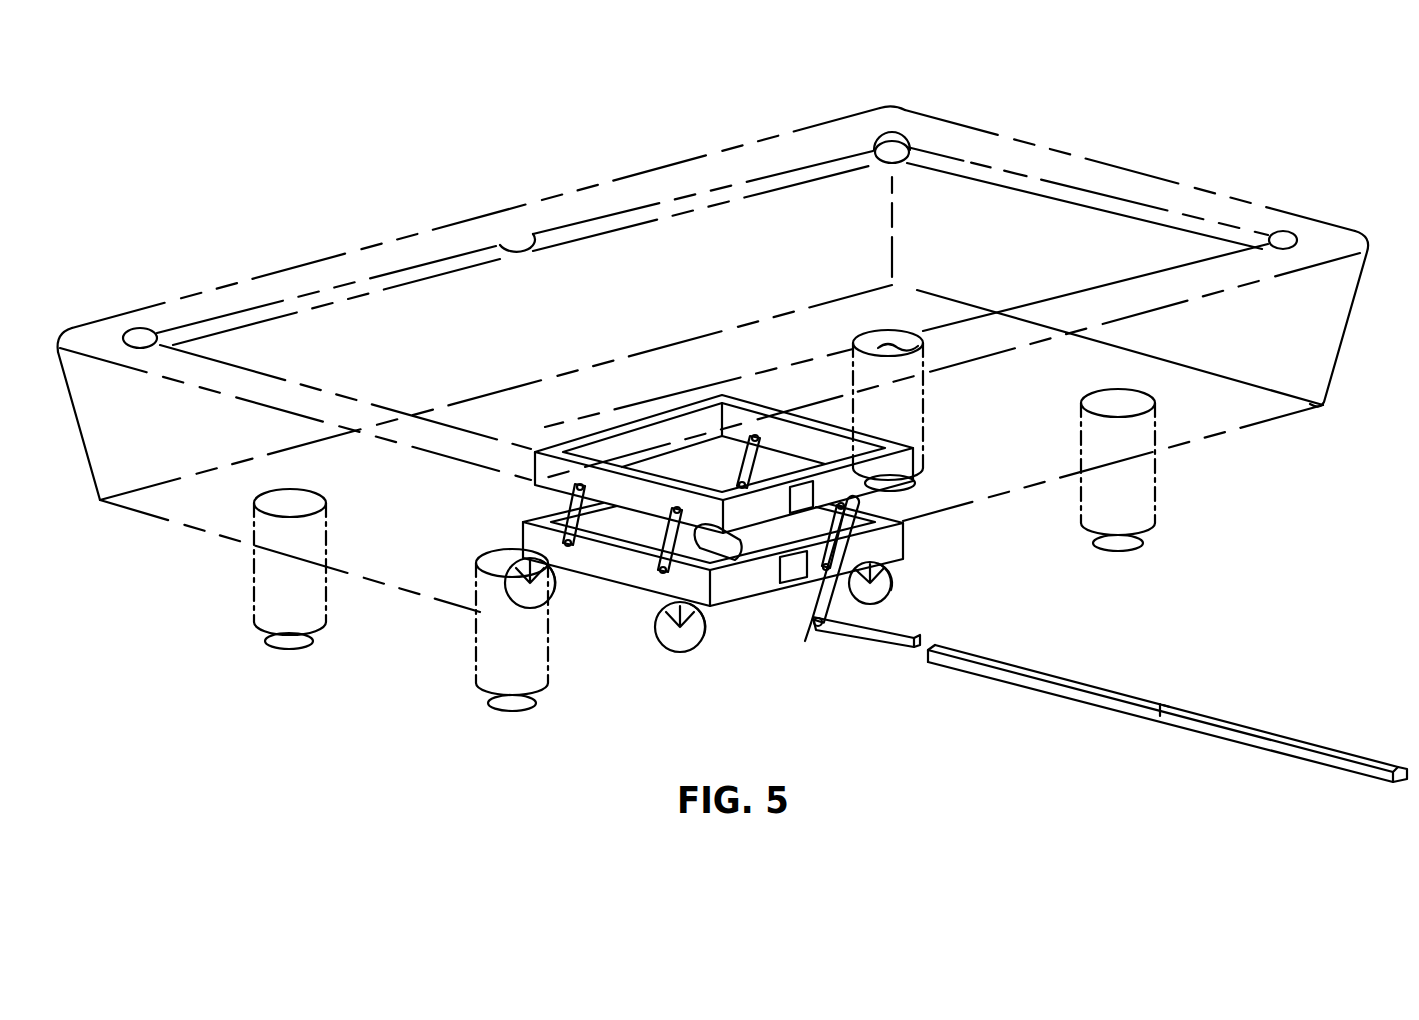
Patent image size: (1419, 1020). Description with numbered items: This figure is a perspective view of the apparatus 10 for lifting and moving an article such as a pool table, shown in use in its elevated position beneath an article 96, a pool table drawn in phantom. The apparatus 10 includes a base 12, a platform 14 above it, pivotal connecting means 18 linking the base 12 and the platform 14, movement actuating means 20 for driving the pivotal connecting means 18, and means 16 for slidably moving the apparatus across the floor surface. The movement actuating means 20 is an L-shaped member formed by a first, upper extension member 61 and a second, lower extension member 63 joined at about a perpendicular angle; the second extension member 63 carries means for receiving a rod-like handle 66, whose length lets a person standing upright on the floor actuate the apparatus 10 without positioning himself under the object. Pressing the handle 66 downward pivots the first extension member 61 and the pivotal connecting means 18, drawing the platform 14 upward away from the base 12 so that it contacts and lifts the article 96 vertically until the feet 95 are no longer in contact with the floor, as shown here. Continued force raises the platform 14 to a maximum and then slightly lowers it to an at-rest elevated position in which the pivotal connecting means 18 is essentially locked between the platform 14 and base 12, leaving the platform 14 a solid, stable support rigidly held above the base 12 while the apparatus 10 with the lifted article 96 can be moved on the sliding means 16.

The article 96 is at (713, 396).
The feet 95 is at (260, 603).
The apparatus 10 is at (772, 547).
The base 12 is at (608, 563).
The platform 14 is at (907, 467).
The means for slidably moving the apparatus 16 is at (710, 645).
The pivotal connecting means 18 is at (655, 560).
The movement actuating means 20 is at (811, 630).
The first extension member 61 is at (812, 601).
The second extension member 63 is at (855, 634).
The handle 66 is at (1065, 680).